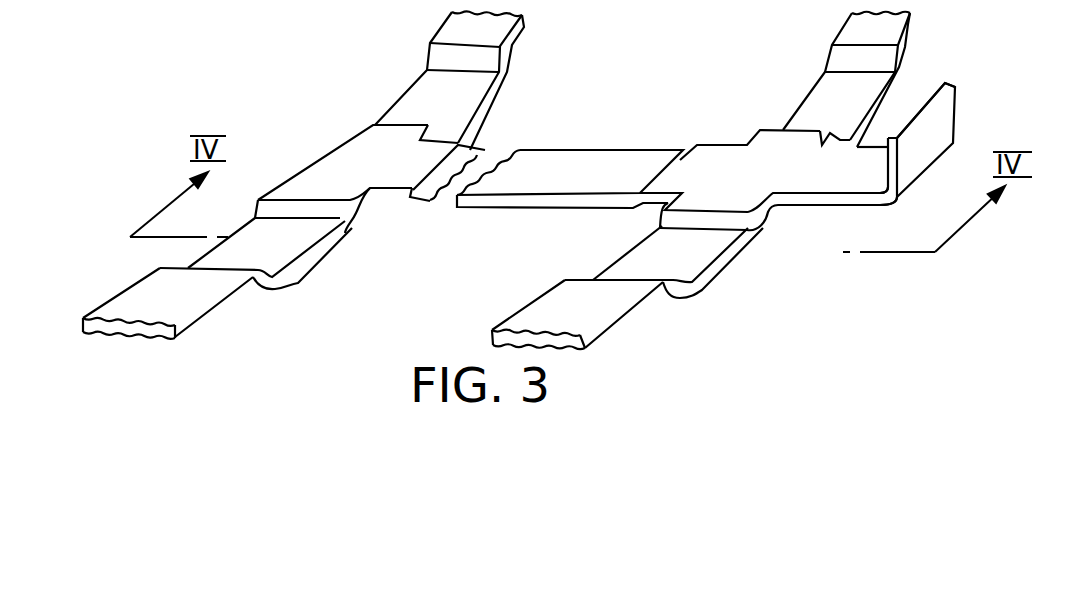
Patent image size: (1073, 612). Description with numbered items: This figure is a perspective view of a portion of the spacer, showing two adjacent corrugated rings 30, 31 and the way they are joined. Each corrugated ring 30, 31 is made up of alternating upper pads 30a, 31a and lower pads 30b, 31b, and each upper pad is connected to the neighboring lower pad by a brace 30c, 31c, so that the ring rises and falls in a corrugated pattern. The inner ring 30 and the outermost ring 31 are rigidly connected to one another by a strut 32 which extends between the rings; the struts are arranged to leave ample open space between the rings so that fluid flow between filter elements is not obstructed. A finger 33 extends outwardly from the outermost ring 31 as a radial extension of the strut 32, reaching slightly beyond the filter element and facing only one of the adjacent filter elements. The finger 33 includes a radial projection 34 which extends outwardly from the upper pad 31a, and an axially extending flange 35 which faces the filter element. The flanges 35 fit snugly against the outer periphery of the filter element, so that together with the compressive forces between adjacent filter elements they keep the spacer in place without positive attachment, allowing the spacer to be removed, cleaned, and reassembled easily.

The corrugated ring 30 is at (490, 106).
The upper pad 30a is at (394, 180).
The lower pad 30b is at (468, 119).
The brace 30c is at (440, 55).
The corrugated ring 31 is at (548, 286).
The upper pad 31a is at (790, 185).
The lower pad 31b is at (860, 121).
The brace 31c is at (835, 58).
The strut 32 is at (584, 189).
The finger 33 is at (960, 143).
The radial projection 34 is at (840, 185).
The axially extending flange 35 is at (945, 118).